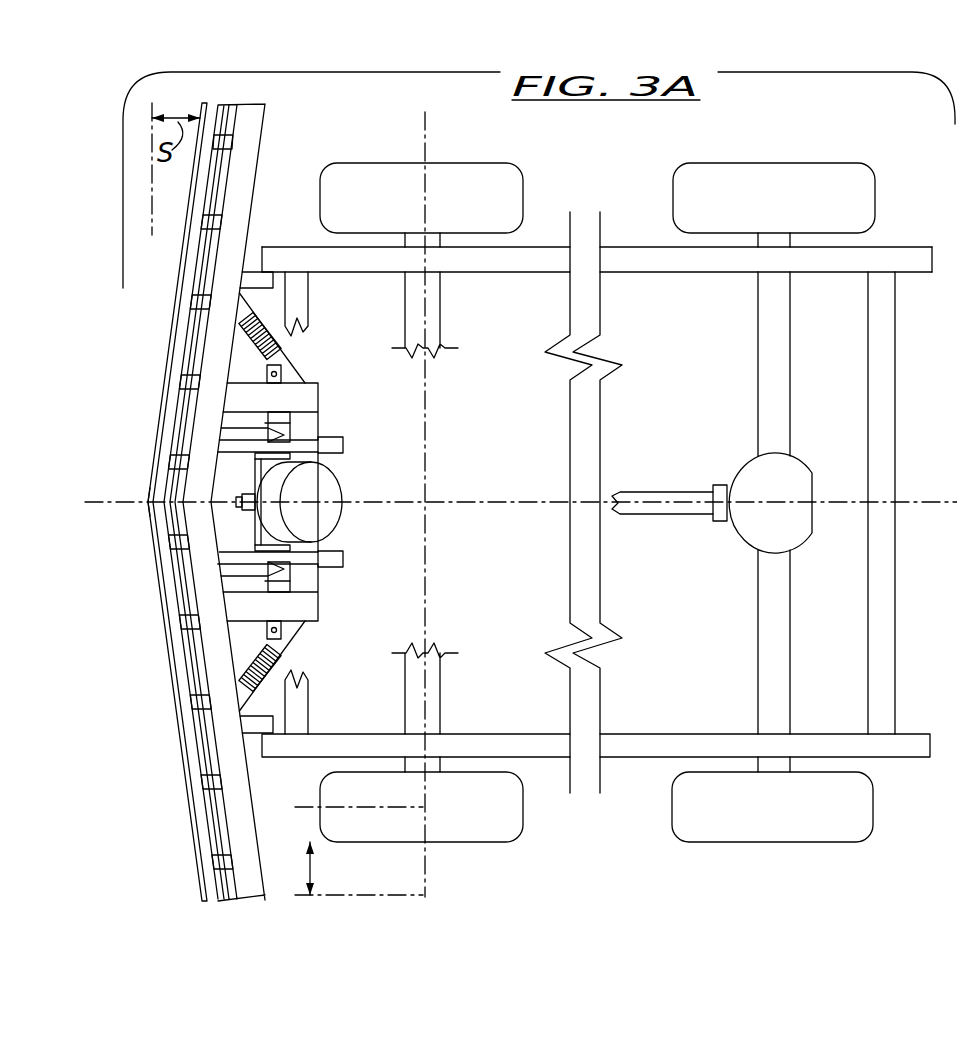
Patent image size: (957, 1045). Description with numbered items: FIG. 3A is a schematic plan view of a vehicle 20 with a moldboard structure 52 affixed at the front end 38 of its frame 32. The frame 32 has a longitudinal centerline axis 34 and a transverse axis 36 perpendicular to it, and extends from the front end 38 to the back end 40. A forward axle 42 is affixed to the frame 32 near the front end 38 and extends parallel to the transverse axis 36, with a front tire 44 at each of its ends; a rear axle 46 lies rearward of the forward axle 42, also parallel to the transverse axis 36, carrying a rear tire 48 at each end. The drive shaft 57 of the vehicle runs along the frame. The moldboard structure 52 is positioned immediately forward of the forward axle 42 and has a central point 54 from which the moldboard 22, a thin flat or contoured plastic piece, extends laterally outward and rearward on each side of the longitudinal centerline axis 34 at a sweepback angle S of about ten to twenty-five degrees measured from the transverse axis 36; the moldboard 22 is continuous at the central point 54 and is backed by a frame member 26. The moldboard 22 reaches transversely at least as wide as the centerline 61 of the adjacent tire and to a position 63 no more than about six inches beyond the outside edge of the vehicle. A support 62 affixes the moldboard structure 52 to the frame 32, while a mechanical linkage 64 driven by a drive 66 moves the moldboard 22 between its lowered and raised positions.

The vehicle 20 is at (617, 217).
The moldboard 22 is at (160, 588).
The panel frame member 26 is at (168, 684).
The frame 32 is at (543, 258).
The longitudinal centerline axis 34 is at (430, 500).
The transverse axis 36 is at (430, 400).
The front end 38 is at (262, 263).
The back end 40 is at (932, 258).
The forward axle 42 is at (430, 703).
The front tire 44 is at (475, 198).
The rear axle 46 is at (780, 365).
The rear tire 48 is at (774, 193).
The moldboard structure 52 is at (300, 640).
The central point 54 is at (147, 503).
The drive shaft 57 is at (697, 490).
The centerline of the adjacent tire 61 is at (335, 806).
The support 62 is at (257, 280).
The position beyond the outside edge of the vehicle structure 63 is at (312, 867).
The mechanical linkage 64 is at (243, 422).
The drive 66 is at (362, 455).